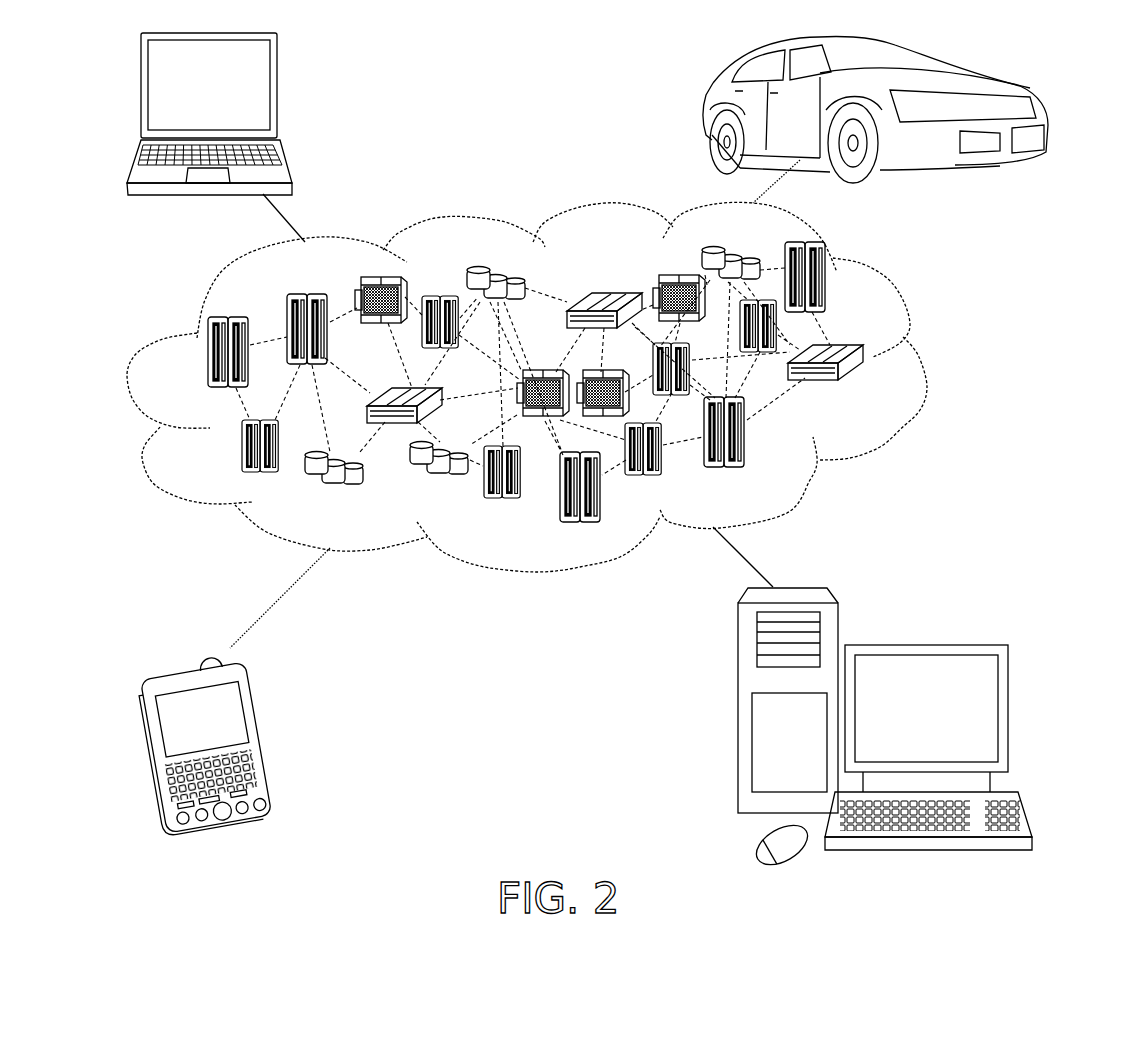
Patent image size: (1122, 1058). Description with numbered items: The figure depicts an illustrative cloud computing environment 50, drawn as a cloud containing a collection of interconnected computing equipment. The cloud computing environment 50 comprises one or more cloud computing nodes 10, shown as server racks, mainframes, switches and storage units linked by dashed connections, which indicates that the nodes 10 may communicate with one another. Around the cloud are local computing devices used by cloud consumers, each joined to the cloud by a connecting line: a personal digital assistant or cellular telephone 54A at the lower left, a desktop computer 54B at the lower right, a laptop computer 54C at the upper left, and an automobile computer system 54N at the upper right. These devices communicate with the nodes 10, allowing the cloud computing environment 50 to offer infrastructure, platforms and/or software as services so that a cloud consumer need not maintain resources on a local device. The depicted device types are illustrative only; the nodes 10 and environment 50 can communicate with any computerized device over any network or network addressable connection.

The cloud computing node 10 is at (874, 394).
The cloud computing environment 50 is at (925, 362).
The personal digital assistant or cellular telephone 54A is at (268, 741).
The desktop computer 54B is at (922, 643).
The laptop computer 54C is at (278, 93).
The automobile computer system 54N is at (708, 110).